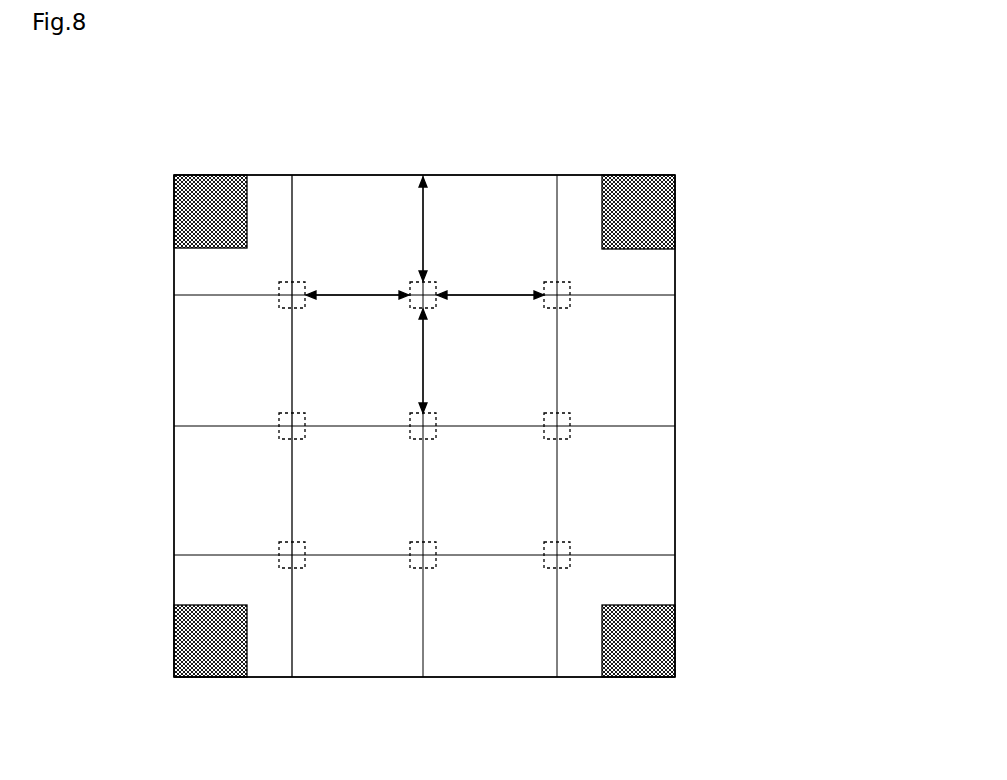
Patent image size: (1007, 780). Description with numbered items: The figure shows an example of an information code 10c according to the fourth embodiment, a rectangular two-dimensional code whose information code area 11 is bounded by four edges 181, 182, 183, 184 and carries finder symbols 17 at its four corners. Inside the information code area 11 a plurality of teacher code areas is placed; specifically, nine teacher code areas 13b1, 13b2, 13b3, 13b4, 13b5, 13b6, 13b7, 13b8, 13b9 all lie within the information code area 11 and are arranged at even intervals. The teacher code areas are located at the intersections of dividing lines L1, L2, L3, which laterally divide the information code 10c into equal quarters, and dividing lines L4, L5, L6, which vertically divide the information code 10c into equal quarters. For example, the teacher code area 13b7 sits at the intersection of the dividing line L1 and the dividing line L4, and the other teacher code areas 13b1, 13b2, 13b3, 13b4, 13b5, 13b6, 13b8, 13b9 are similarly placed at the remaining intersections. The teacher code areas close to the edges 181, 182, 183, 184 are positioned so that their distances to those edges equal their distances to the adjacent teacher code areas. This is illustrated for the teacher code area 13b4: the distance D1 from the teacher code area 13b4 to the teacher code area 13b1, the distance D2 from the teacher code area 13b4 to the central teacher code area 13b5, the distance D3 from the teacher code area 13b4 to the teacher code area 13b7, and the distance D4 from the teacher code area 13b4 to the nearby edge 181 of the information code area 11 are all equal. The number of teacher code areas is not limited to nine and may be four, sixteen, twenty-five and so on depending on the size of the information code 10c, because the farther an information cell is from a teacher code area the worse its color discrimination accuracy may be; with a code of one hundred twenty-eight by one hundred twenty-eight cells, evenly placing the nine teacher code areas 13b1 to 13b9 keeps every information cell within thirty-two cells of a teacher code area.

The information code 10c is at (558, 151).
The information code area 11 is at (633, 402).
The finder symbols 17 is at (630, 208).
The edge 181 is at (335, 175).
The edge 182 is at (676, 508).
The edge 183 is at (335, 677).
The edge 184 is at (174, 480).
The teacher code area 13b1 is at (567, 287).
The teacher code area 13b2 is at (568, 441).
The teacher code area 13b3 is at (568, 571).
The teacher code area 13b4 is at (432, 287).
The teacher code area 13b5 is at (430, 420).
The teacher code area 13b6 is at (428, 570).
The teacher code area 13b7 is at (278, 290).
The teacher code area 13b8 is at (285, 418).
The teacher code area 13b9 is at (285, 560).
The dividing line L1 is at (292, 212).
The dividing line L2 is at (422, 608).
The dividing line L3 is at (557, 223).
The dividing line L4 is at (230, 295).
The dividing line L5 is at (212, 426).
The dividing line L6 is at (203, 557).
The distance D1 is at (490, 317).
The distance D2 is at (406, 361).
The distance D3 is at (357, 279).
The distance D4 is at (406, 229).